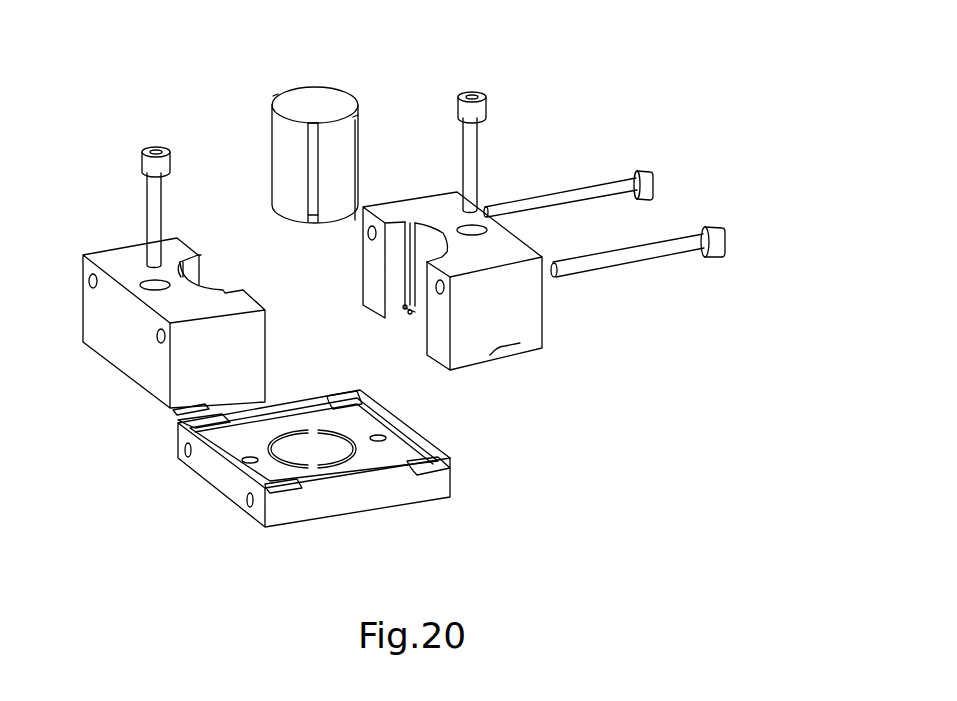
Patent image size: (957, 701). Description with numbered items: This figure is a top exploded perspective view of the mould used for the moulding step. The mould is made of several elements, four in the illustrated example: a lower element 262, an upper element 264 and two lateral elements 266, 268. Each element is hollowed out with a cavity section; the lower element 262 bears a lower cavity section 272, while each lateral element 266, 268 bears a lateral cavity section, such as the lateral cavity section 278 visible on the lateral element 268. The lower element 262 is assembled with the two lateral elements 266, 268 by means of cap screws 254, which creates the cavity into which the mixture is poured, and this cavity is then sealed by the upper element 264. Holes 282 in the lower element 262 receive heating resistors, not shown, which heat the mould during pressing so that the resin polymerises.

The cap screws 254 is at (475, 140).
The lower element 262 is at (265, 507).
The upper element 264 is at (340, 143).
The lateral element 266 is at (127, 357).
The lateral element 268 is at (438, 312).
The lower cavity section 272 is at (313, 452).
The lateral cavity section 278 is at (420, 315).
The holes 282 is at (247, 503).